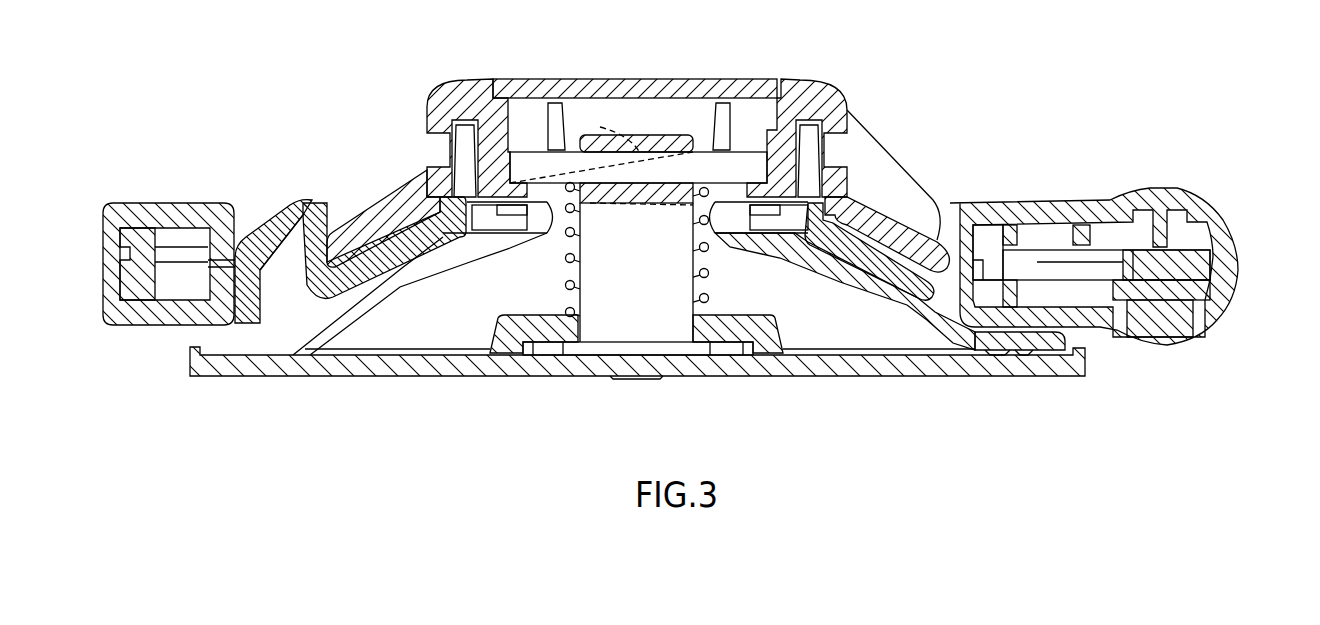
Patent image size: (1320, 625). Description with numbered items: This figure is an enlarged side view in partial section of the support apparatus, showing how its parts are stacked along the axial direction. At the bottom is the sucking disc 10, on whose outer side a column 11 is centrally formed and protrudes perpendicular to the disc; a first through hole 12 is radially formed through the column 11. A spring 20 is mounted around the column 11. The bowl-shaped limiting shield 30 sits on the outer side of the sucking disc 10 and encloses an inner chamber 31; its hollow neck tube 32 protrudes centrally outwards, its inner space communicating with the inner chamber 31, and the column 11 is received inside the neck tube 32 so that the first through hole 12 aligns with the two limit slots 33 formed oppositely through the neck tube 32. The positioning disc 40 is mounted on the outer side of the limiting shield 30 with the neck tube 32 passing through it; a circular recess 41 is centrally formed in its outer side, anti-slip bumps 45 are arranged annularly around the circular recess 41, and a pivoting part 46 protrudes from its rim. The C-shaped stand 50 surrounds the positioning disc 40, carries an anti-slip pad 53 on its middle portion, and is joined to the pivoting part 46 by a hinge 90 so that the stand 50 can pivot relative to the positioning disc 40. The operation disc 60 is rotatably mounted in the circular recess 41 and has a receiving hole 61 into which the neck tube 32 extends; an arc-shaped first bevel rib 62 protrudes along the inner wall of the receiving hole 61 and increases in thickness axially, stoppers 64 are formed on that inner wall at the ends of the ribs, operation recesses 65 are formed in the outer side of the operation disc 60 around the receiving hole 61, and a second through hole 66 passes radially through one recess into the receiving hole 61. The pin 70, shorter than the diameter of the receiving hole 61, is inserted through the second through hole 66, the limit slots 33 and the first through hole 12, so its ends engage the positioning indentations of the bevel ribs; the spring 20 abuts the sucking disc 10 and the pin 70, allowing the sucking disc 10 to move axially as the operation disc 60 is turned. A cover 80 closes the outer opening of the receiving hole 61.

The sucking disc 10 is at (1068, 368).
The column 11 is at (670, 291).
The first through hole 12 is at (654, 173).
The spring 20 is at (563, 285).
The limiting shield 30 is at (1043, 340).
The inner chamber 31 is at (820, 335).
The neck tube 32 is at (647, 112).
The limit slots 33 is at (722, 127).
The positioning disc 40 is at (300, 205).
The circular recess 41 is at (327, 205).
The anti-slip bumps 45 is at (203, 210).
The pivoting part 46 is at (1133, 203).
The stand 50 is at (262, 210).
The anti-slip pad 53 is at (118, 208).
The operation disc 60 is at (443, 110).
The receiving hole 61 is at (755, 120).
The first bevel rib 62 is at (627, 130).
The stoppers 64 is at (590, 156).
The operation recesses 65 is at (380, 178).
The second through hole 66 is at (438, 147).
The pin 70 is at (757, 170).
The cover 80 is at (537, 80).
The hinge 90 is at (1178, 270).